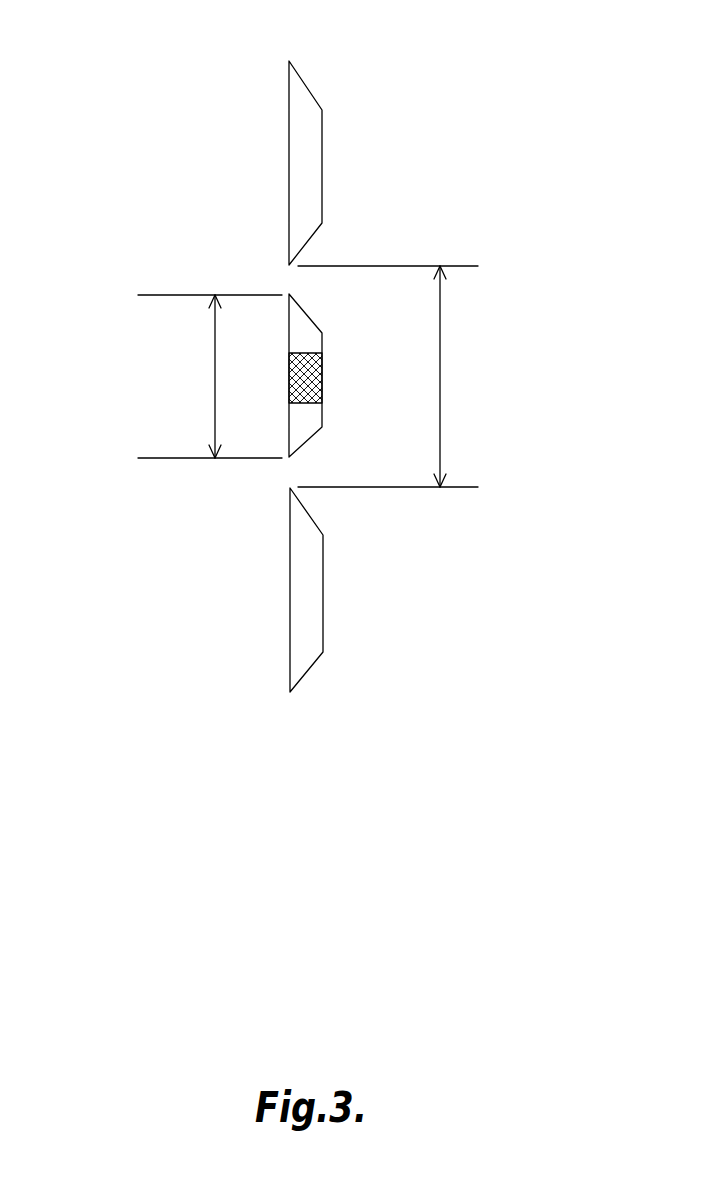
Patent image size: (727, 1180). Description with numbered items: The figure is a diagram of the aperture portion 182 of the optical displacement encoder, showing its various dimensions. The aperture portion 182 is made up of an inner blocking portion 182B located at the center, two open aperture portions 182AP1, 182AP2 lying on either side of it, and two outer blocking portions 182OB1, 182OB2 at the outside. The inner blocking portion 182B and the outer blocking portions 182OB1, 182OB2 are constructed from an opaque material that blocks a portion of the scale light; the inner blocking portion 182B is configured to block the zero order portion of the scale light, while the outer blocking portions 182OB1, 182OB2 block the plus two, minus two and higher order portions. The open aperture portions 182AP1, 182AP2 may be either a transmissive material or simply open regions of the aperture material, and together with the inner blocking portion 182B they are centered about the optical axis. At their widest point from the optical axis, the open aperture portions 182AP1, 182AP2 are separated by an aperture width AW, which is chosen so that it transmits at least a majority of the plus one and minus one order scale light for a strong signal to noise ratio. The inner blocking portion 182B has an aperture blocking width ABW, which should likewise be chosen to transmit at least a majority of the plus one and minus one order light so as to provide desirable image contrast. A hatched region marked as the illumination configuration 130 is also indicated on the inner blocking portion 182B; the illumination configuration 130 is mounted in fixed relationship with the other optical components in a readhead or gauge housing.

The aperture portion 182 is at (373, 82).
The outer blocking portion 182OB1 is at (289, 102).
The outer blocking portion 182OB2 is at (290, 632).
The open aperture portion 182AP1 is at (288, 278).
The open aperture portion 182AP2 is at (287, 473).
The inner blocking portion 182B is at (309, 313).
The illumination configuration 130 is at (322, 376).
The aperture blocking width ABW is at (215, 364).
The aperture width AW is at (440, 378).